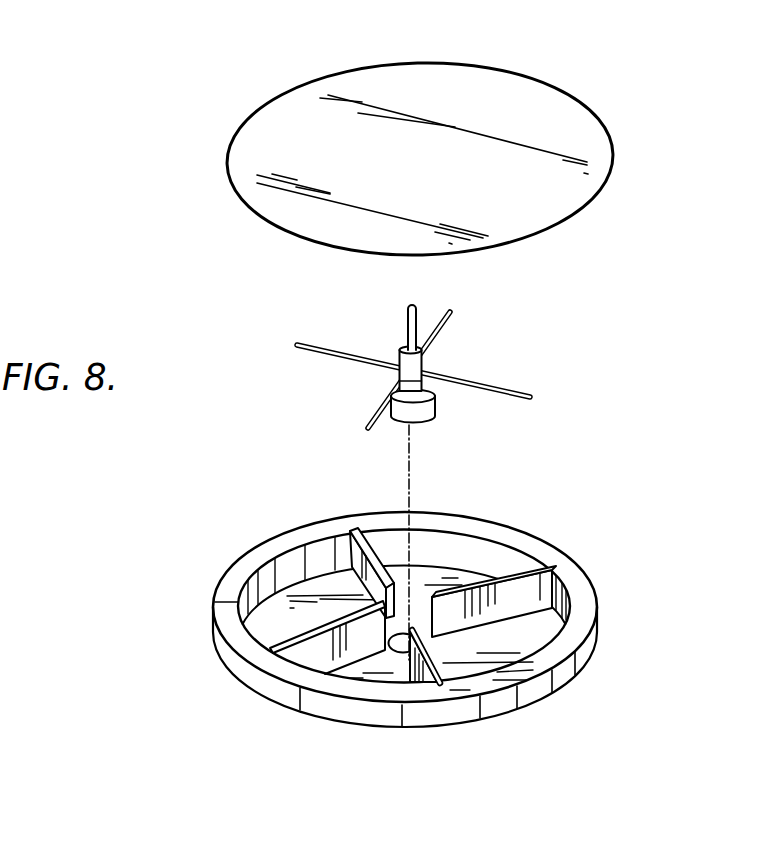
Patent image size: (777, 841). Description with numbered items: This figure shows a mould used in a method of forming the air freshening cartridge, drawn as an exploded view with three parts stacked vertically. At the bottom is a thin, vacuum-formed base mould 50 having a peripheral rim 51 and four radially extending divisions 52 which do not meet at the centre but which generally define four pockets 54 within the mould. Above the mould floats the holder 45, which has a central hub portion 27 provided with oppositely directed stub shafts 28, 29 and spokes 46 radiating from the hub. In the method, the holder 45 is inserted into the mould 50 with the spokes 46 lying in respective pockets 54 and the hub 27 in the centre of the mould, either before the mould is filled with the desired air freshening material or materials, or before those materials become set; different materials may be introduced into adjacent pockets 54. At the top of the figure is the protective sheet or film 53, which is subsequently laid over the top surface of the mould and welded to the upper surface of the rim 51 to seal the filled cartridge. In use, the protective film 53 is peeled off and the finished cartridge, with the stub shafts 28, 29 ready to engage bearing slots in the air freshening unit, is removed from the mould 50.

The protective film 53 is at (357, 78).
The holder 45 is at (377, 368).
The spokes 46 is at (327, 345).
The stub shaft 28 is at (420, 318).
The hub portion 27 is at (422, 356).
The stub shaft 29 is at (436, 417).
The base mould 50 is at (497, 707).
The peripheral rim 51 is at (588, 596).
The divisions 52 is at (302, 650).
The pockets 54 is at (313, 583).